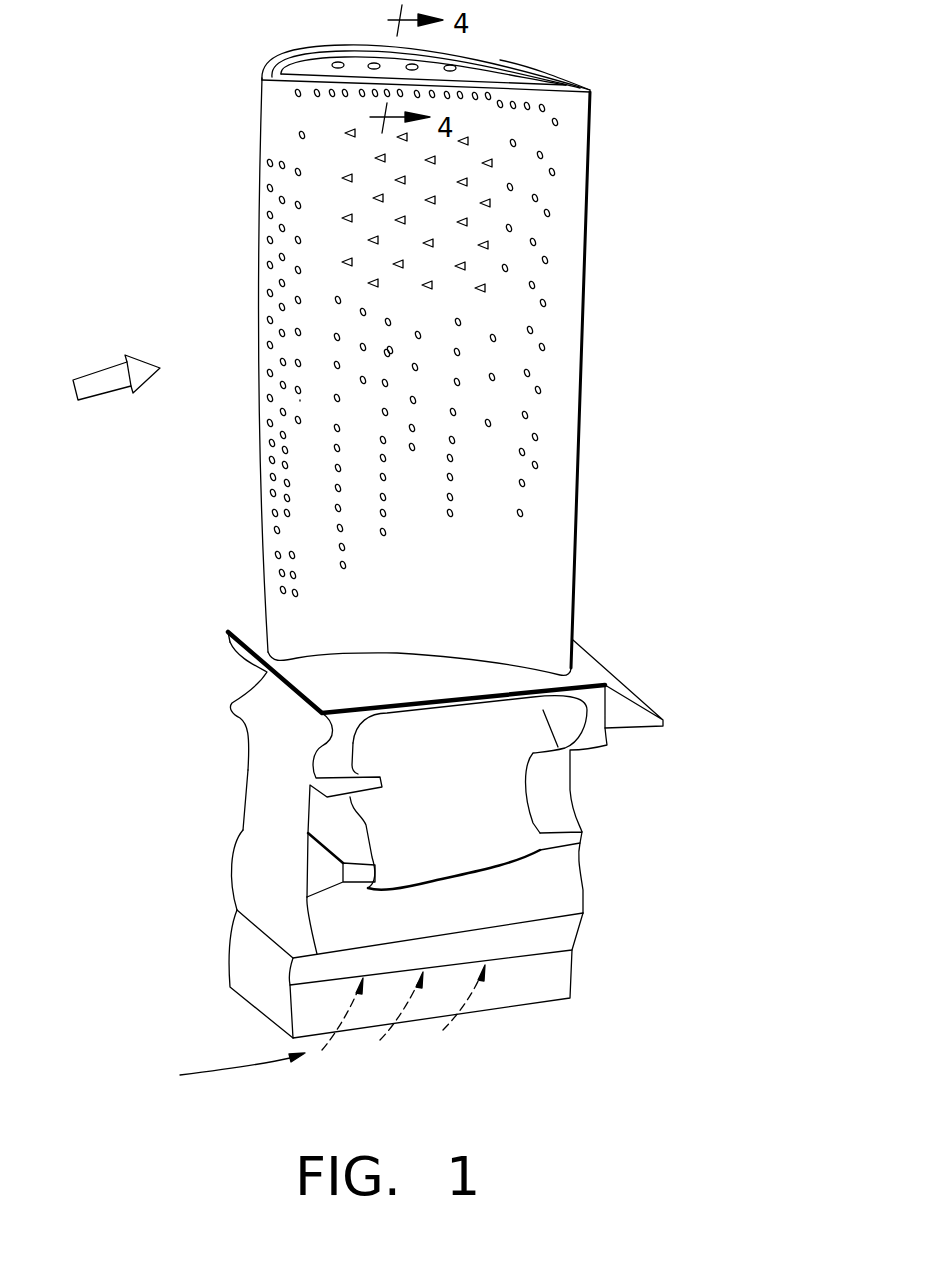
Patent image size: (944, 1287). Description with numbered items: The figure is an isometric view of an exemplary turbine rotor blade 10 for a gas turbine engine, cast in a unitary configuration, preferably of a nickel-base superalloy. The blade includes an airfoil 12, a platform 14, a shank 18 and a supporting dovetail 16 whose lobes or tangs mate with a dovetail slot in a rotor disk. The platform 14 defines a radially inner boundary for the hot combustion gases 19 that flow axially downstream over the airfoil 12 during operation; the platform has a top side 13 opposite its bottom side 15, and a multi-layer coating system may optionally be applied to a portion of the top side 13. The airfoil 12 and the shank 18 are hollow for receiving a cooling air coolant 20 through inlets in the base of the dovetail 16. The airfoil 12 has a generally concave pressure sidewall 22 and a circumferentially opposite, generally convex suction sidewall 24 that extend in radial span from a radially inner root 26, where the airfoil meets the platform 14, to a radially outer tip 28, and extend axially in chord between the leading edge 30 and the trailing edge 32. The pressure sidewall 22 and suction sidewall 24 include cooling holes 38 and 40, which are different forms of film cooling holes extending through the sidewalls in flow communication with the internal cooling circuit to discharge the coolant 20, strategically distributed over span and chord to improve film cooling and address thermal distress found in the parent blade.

The turbine rotor blade 10 is at (713, 130).
The airfoil 12 is at (260, 105).
The top side of the platform 13 is at (257, 632).
The platform 14 is at (228, 632).
The bottom side of the platform 15 is at (262, 672).
The dovetail 16 is at (230, 872).
The shank 18 is at (280, 772).
The hot combustion gases 19 is at (97, 368).
The cooling air coolant 20 is at (243, 1075).
The pressure sidewall 22 is at (443, 581).
The suction sidewall 24 is at (483, 55).
The root 26 is at (405, 652).
The tip 28 is at (336, 48).
The leading edge 30 is at (262, 565).
The trailing edge 32 is at (582, 412).
The cooling holes 38 is at (455, 380).
The cooling holes 40 is at (340, 177).